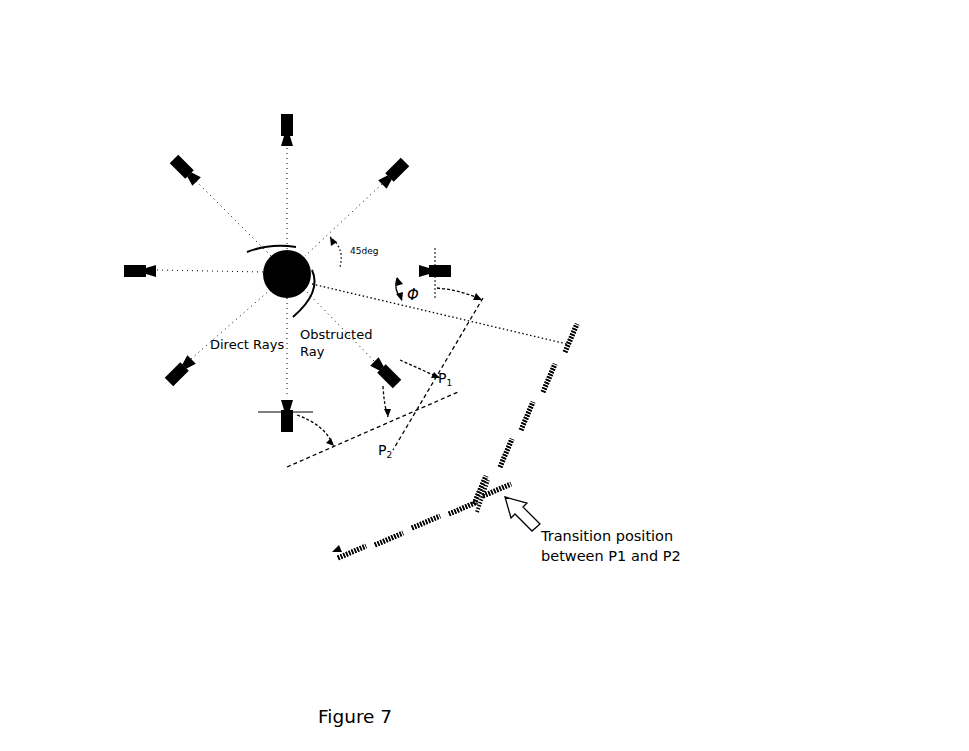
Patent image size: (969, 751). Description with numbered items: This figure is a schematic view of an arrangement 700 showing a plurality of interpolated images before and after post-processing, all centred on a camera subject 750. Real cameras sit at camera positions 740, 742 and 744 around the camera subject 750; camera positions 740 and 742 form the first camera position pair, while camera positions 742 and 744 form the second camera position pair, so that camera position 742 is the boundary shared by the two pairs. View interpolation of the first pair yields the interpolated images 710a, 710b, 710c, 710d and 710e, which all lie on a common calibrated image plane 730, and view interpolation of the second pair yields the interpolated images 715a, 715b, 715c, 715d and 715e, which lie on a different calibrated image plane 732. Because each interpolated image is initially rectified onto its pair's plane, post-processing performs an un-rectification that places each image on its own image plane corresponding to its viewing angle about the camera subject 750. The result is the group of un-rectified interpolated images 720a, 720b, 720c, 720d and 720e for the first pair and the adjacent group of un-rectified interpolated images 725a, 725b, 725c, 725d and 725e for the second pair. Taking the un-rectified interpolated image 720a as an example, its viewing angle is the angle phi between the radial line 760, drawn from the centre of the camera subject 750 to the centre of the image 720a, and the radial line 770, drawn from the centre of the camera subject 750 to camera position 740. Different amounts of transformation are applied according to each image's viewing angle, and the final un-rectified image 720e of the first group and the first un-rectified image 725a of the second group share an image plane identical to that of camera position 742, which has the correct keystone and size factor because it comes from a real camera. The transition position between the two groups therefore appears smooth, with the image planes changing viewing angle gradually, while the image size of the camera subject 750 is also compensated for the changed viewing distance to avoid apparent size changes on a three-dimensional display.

The camera calibration system 700 is at (691, 92).
The interpolated image 710a is at (571, 340).
The interpolated image 710b is at (550, 383).
The interpolated image 710c is at (528, 417).
The interpolated image 710d is at (505, 448).
The interpolated image 710e is at (492, 480).
The interpolated image 715a is at (492, 485).
The interpolated image 715b is at (458, 505).
The interpolated image 715c is at (431, 515).
The interpolated image 715d is at (400, 522).
The interpolated image 715e is at (345, 553).
The un-rectified interpolated image 720a is at (562, 352).
The un-rectified interpolated image 720b is at (548, 394).
The un-rectified interpolated image 720c is at (527, 430).
The un-rectified interpolated image 720d is at (503, 467).
The un-rectified interpolated image 720e is at (485, 496).
The un-rectified interpolated image 725a is at (490, 488).
The un-rectified interpolated image 725b is at (483, 500).
The un-rectified interpolated image 725c is at (452, 500).
The un-rectified interpolated image 725d is at (433, 513).
The un-rectified interpolated image 725e is at (399, 524).
The image plane 730 is at (490, 290).
The image plane 732 is at (320, 470).
The camera position 740 is at (447, 267).
The camera position 742 is at (374, 378).
The camera position 744 is at (285, 427).
The camera subject 750 is at (296, 247).
The radial line 760 is at (373, 297).
The radial line 770 is at (387, 277).